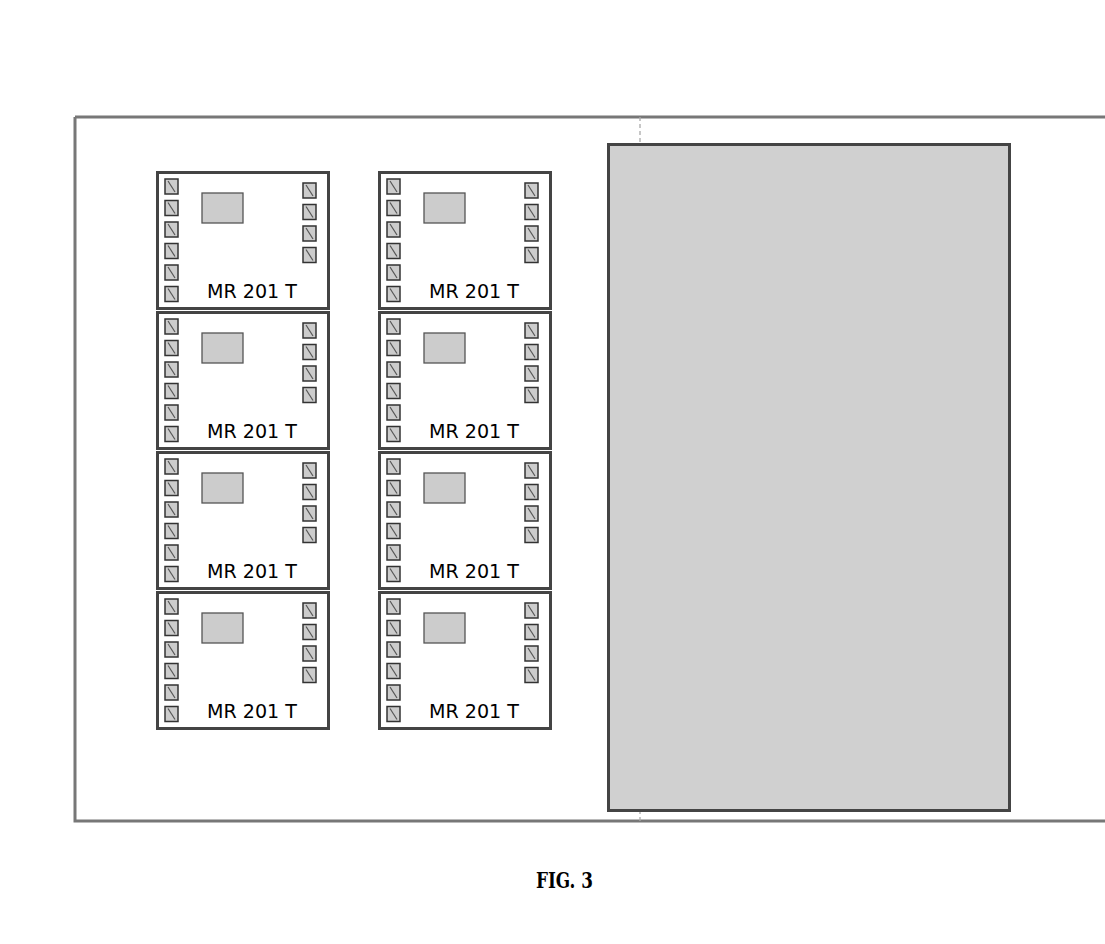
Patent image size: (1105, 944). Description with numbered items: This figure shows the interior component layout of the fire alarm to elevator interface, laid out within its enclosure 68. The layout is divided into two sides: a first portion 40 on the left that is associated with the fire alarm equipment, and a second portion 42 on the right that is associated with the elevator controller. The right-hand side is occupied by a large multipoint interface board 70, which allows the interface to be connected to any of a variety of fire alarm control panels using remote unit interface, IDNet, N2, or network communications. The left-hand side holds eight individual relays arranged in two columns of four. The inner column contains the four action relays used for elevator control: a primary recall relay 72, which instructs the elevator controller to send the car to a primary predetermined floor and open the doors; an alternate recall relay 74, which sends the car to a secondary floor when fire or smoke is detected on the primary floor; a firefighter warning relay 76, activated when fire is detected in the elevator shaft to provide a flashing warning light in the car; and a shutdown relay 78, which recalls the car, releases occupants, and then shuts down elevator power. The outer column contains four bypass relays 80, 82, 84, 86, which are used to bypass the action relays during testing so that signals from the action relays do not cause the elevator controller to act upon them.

The first portion 40 is at (277, 95).
The second portion 42 is at (952, 97).
The enclosure 68 is at (145, 767).
The multipoint interface board 70 is at (872, 292).
The primary recall relay 72 is at (510, 215).
The alternate recall relay 74 is at (522, 345).
The firefighter warning relay 76 is at (512, 495).
The shutdown relay 78 is at (512, 628).
The bypass relay 80 is at (243, 240).
The bypass relay 82 is at (223, 387).
The bypass relay 84 is at (218, 520).
The bypass relay 86 is at (230, 672).